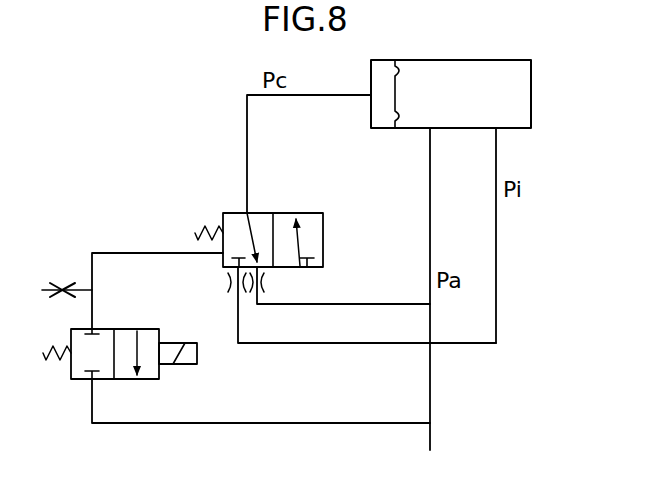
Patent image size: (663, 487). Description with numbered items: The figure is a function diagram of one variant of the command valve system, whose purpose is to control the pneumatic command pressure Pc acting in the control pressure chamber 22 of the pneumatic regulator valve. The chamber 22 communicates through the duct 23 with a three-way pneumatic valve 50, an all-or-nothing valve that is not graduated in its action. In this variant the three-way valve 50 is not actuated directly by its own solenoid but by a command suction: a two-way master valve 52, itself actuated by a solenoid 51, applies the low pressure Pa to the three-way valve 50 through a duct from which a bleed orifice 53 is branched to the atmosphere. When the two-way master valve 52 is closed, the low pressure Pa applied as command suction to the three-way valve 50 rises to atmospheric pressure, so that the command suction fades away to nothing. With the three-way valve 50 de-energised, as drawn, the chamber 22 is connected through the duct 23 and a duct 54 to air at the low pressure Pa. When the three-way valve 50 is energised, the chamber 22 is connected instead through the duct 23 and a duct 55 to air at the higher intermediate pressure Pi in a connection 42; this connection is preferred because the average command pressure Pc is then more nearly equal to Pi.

The control pressure chamber 22 is at (384, 60).
The duct 23 is at (333, 94).
The connection 42 is at (497, 133).
The three-way pneumatic valve 50 is at (290, 208).
The solenoid 51 is at (189, 343).
The two-way master valve 52 is at (124, 324).
The bleed orifice 53 is at (132, 291).
The duct 54 is at (360, 304).
The duct 55 is at (310, 343).